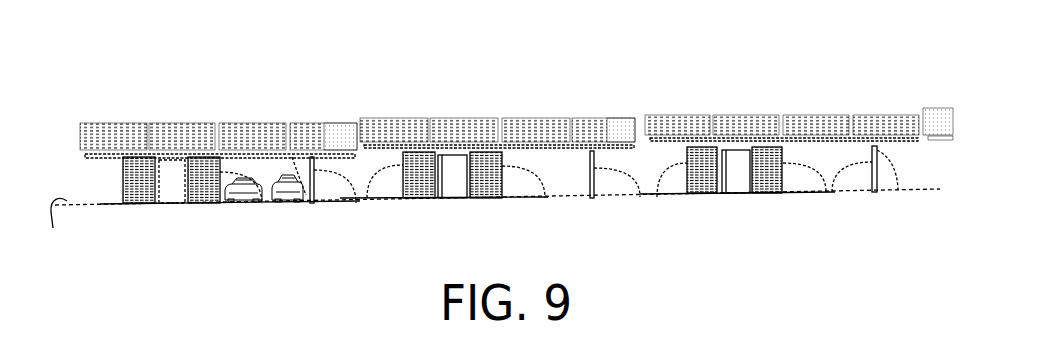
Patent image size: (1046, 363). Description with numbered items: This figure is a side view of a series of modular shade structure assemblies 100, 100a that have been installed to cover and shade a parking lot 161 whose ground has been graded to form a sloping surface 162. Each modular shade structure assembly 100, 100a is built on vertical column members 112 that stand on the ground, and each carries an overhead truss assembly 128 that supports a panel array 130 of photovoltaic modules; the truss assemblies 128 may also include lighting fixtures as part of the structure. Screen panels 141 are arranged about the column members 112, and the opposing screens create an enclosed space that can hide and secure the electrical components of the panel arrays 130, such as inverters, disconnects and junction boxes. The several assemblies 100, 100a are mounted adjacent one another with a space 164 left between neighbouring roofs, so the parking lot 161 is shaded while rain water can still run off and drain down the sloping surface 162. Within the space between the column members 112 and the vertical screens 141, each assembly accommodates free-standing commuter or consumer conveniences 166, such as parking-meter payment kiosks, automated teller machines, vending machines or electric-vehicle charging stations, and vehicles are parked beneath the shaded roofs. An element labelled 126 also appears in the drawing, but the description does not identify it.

The modular shade structure assembly 100 is at (186, 98).
The modular shade structure assembly 100a is at (467, 198).
The truss assembly 128 is at (123, 116).
The panel array 130 is at (307, 120).
The space 164 is at (356, 110).
The parking lot 161 is at (918, 183).
The sloping surface 162 is at (64, 229).
The column member 112 is at (123, 176).
The screen panel 141 is at (145, 200).
The free-standing commuter or consumer convenience 166 is at (165, 200).
The support post 126 is at (308, 192).